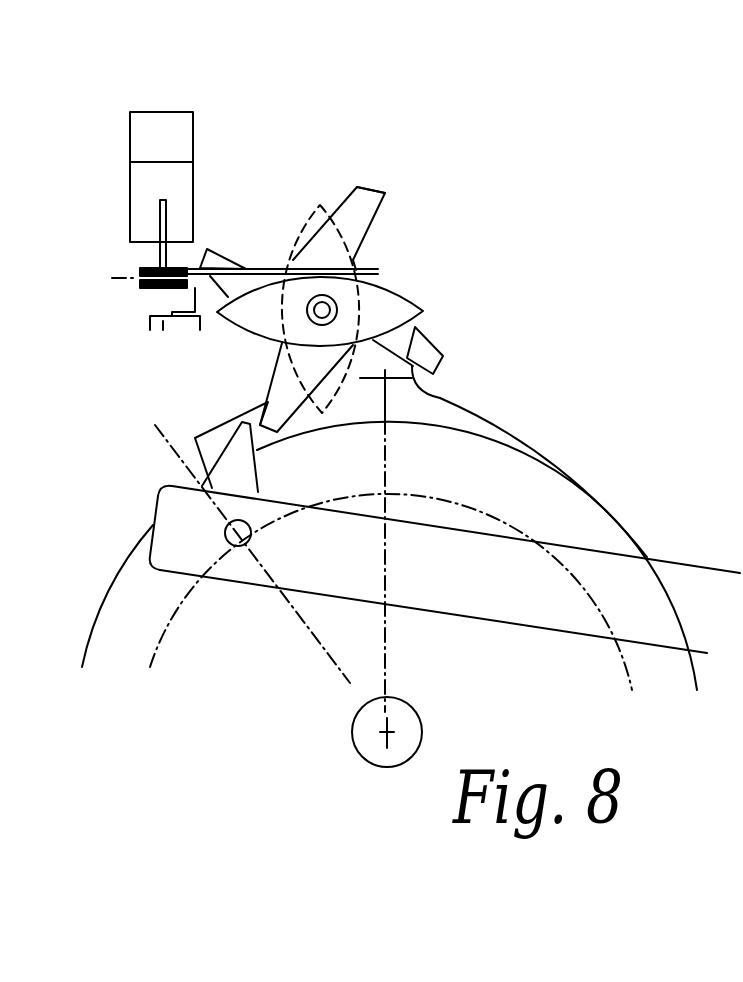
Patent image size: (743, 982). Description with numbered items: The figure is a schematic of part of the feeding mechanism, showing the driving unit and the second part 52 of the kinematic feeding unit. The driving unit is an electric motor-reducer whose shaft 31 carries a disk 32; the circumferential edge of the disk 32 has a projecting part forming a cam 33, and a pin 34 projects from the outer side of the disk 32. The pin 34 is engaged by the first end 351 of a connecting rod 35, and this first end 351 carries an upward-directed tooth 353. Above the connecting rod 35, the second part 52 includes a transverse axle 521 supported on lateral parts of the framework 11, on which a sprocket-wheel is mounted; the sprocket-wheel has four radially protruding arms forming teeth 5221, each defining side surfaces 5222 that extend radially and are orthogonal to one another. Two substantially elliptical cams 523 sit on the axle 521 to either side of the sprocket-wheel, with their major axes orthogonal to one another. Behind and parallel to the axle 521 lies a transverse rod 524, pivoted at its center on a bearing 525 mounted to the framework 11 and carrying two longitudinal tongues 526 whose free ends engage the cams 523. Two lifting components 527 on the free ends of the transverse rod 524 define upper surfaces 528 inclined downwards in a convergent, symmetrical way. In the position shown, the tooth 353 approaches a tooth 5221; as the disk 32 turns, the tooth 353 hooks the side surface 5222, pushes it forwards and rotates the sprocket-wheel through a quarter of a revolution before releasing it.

The framework 11 is at (161, 322).
The shaft 31 is at (404, 712).
The disk 32 is at (600, 527).
The cam 33 is at (244, 408).
The pin 34 is at (254, 541).
The connecting rod 35 is at (422, 569).
The first end 351 is at (176, 582).
The tooth 353 is at (237, 463).
The second part 52 is at (455, 264).
The transverse axle 521 is at (318, 313).
The elliptical cam 523 is at (303, 232).
The transverse rod 524 is at (160, 254).
The bearing 525 is at (172, 289).
The longitudinal tongue 526 is at (278, 270).
The lifting component 527 is at (184, 183).
The upper surface 528 is at (172, 138).
The tooth 5221 is at (213, 253).
The side surface 5222 is at (380, 221).